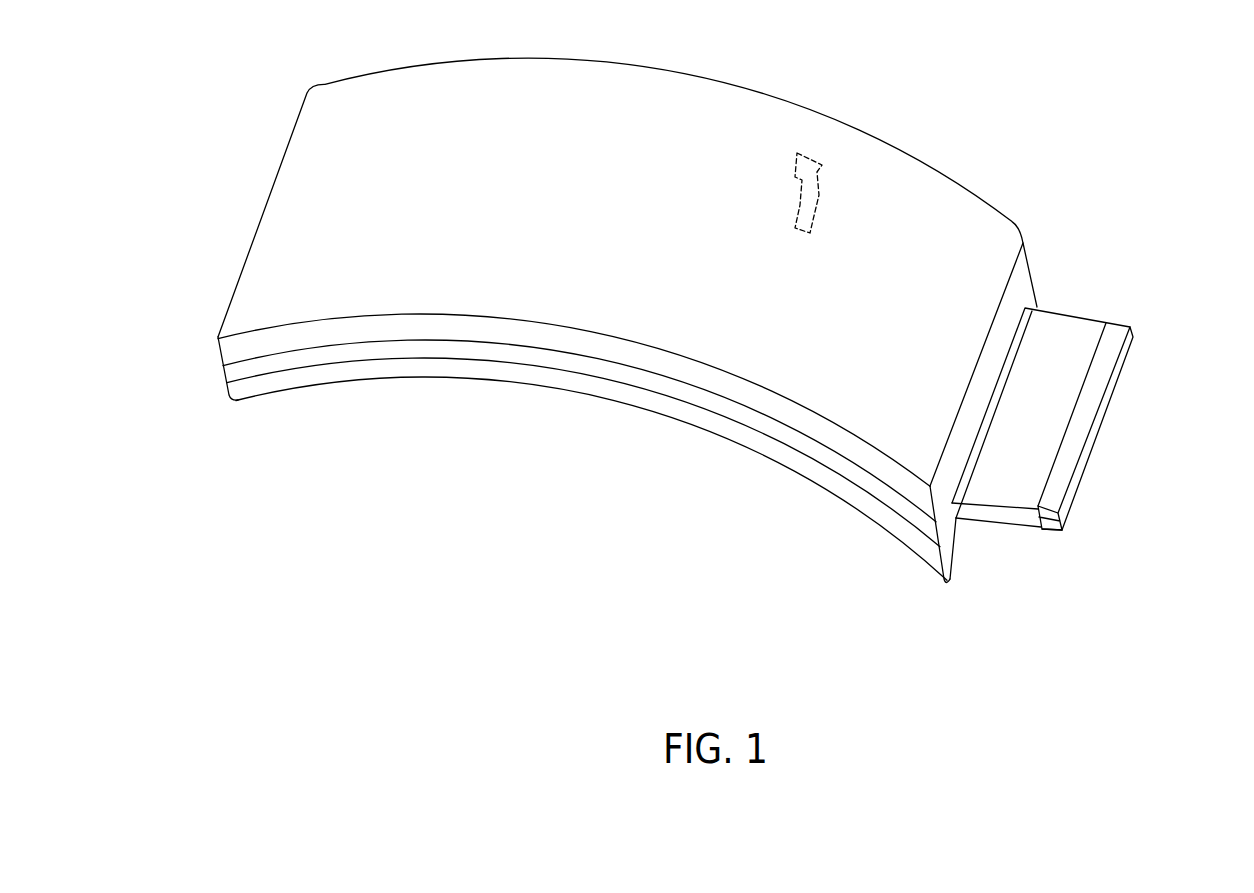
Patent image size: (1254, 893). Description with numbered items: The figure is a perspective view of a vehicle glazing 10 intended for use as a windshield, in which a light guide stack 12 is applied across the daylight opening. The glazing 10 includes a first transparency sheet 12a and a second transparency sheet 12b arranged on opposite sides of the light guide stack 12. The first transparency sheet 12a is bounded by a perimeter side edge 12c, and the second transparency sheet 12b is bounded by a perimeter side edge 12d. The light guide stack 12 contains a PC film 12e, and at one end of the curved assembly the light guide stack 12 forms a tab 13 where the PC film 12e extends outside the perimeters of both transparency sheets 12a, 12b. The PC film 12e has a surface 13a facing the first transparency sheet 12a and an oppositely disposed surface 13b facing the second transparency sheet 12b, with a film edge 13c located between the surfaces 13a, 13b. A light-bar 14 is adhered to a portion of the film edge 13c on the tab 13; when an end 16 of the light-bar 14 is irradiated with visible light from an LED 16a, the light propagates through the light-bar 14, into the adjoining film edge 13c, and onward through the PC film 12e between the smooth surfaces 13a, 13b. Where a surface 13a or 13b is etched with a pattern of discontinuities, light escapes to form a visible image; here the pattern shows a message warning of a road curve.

The vehicle glazing 10 is at (740, 118).
The light guide stack 12 is at (478, 347).
The first transparency sheet 12a is at (373, 283).
The second transparency sheet 12b is at (620, 390).
The perimeter side edge 12c is at (219, 353).
The perimeter side edge 12d is at (226, 392).
The PC film 12e is at (997, 518).
The tab 13 is at (1090, 324).
The surface 13a is at (1063, 342).
The surface 13b is at (1015, 530).
The film edge 13c is at (1086, 392).
The light-bar 14 is at (1133, 352).
The end 16 is at (1048, 511).
The LED 16a is at (1057, 531).